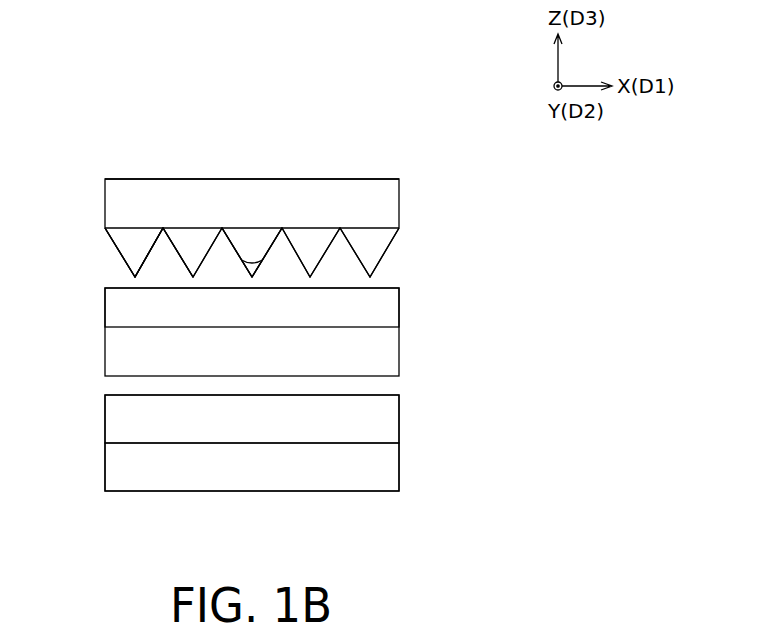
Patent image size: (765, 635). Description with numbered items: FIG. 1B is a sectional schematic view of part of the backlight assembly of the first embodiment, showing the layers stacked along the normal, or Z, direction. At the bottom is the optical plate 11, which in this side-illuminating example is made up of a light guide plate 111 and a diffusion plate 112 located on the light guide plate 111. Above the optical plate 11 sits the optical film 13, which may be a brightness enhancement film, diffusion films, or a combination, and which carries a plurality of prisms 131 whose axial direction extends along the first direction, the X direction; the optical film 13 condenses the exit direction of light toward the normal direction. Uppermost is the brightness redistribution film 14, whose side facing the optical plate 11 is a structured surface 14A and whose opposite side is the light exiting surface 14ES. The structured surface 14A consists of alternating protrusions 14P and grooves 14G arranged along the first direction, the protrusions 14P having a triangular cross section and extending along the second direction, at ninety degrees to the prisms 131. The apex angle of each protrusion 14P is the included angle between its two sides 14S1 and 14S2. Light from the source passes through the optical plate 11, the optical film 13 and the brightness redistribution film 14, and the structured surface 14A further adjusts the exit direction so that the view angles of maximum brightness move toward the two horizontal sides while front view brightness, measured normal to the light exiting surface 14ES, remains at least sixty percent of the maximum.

The brightness redistribution film 14 is at (385, 206).
The light exiting surface 14ES is at (367, 178).
The protrusions 14P is at (128, 256).
The grooves 14G is at (160, 281).
The first side of protrusion 14S1 is at (226, 256).
The second side of protrusion 14S2 is at (278, 256).
The structured surface 14A is at (415, 261).
The optical film 13 is at (383, 356).
The prisms 131 is at (383, 309).
The optical plate 11 is at (487, 414).
The diffusion plate 112 is at (383, 421).
The light guide plate 111 is at (383, 462).